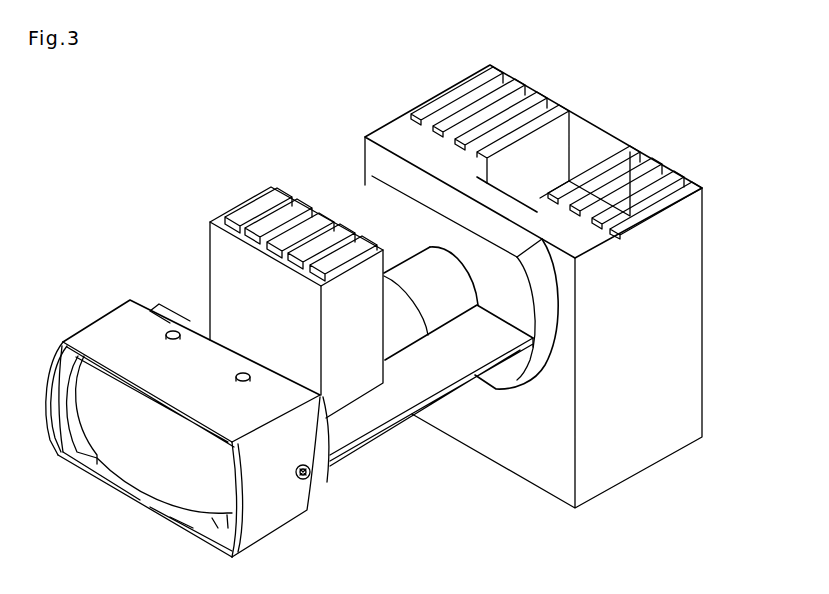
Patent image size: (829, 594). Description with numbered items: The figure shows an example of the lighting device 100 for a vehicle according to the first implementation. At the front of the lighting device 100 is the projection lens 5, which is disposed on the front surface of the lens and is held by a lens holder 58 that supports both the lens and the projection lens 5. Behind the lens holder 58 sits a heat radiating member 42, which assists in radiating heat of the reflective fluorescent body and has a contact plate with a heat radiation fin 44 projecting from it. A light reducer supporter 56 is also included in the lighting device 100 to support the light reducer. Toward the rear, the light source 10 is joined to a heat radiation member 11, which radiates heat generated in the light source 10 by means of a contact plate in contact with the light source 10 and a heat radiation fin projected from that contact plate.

The lighting device for a vehicle 100 is at (97, 113).
The projection lens 5 is at (138, 482).
The light source 10 is at (424, 270).
The heat radiation member 11 is at (690, 420).
The heat radiating member 42 is at (238, 146).
The heat radiation fin 44 is at (215, 250).
The light reducer supporter 56 is at (400, 332).
The lens holder 58 is at (274, 514).